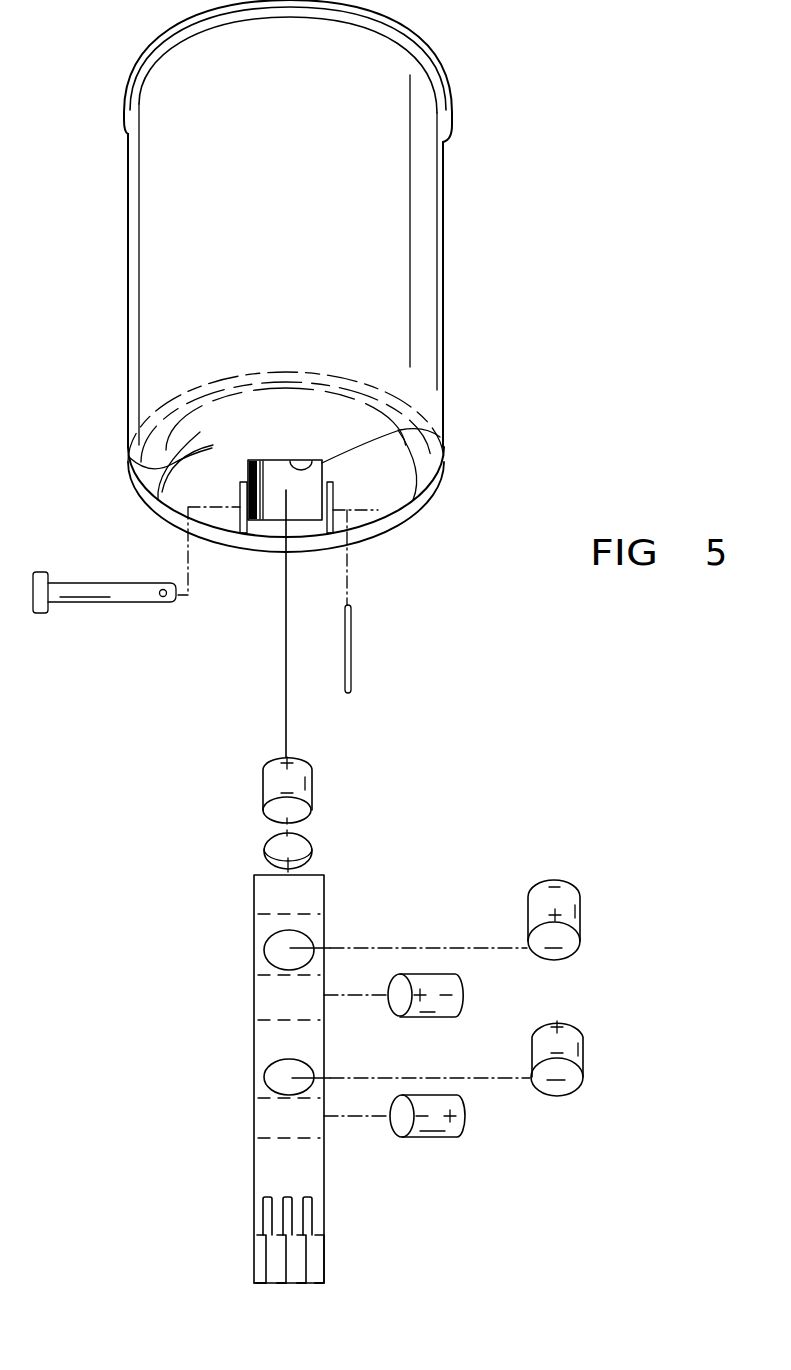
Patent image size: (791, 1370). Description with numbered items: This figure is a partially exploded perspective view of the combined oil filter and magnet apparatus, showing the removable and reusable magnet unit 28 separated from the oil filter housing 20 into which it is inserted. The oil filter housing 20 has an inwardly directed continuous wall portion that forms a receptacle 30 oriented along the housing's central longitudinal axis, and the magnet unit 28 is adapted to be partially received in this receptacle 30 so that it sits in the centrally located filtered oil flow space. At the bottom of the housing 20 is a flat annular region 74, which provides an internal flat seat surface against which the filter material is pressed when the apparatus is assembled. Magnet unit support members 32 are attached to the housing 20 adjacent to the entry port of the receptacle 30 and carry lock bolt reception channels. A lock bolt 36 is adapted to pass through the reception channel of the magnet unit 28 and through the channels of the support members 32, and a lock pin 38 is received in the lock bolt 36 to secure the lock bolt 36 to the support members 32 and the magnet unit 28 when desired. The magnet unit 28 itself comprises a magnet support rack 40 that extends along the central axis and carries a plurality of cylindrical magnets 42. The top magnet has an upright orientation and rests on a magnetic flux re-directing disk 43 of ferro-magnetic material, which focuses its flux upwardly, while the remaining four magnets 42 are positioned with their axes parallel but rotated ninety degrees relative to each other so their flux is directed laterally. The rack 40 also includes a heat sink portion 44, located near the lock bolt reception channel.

The oil filter housing 20 is at (445, 270).
The flat annular region 74 is at (130, 458).
The receptacle 30 is at (440, 437).
The magnet unit support members 32 is at (240, 497).
The lock bolt 36 is at (127, 600).
The lock pin 38 is at (352, 650).
The removable and reusable magnet unit 28 is at (422, 866).
The magnet support rack 40 is at (265, 900).
The cylindrical magnets 42 is at (265, 790).
The magnetic flux re-directing disk 43 is at (312, 852).
The heat sink portion 44 is at (235, 1195).